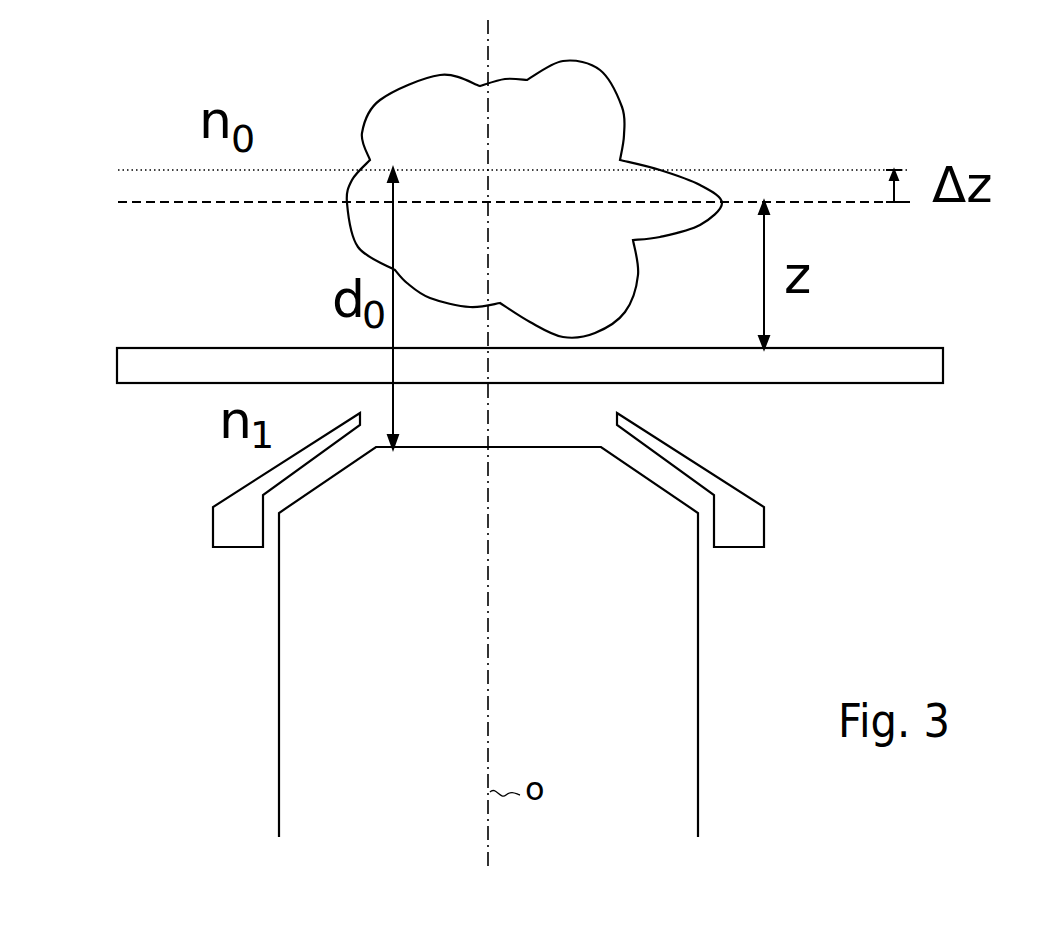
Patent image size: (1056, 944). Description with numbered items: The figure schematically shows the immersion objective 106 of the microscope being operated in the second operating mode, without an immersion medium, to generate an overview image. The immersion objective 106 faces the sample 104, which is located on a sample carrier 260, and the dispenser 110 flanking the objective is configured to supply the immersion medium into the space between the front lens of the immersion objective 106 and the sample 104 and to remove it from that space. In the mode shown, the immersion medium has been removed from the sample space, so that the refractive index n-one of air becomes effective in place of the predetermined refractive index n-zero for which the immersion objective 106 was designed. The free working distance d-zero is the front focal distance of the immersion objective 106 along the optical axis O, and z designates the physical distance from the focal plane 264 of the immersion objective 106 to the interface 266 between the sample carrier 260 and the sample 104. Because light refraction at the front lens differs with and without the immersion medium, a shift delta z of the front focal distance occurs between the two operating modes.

The sample 104 is at (595, 130).
The immersion objective 106 is at (699, 718).
The dispenser 110 is at (222, 517).
The sample carrier 260 is at (230, 367).
The focal plane 264 is at (848, 206).
The interface 266 is at (910, 347).